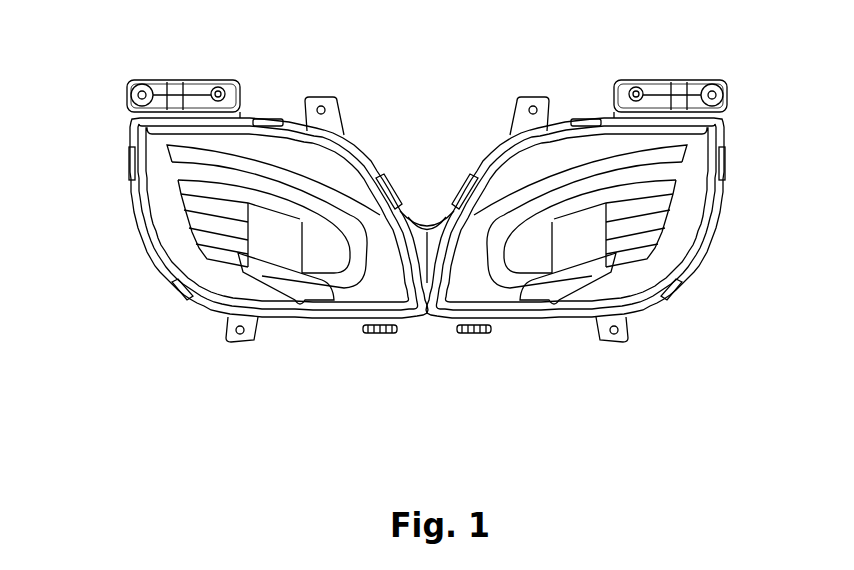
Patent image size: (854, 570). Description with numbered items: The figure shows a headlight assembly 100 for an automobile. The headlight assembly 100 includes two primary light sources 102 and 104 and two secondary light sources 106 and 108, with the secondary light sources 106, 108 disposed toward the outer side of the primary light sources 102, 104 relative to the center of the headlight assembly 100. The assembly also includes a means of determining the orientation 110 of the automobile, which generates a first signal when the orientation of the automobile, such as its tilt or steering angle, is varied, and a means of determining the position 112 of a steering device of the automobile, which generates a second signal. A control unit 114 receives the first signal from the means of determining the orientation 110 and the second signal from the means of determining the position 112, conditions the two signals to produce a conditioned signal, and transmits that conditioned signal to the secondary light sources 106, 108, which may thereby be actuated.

The headlight assembly 100 is at (268, 182).
The primary light source 102 is at (333, 253).
The primary light source 104 is at (268, 234).
The secondary light source 106 is at (202, 197).
The secondary light source 108 is at (220, 250).
The means of determining the orientation 110 is at (428, 222).
The means of determining the position 112 is at (428, 240).
The control unit 114 is at (427, 283).